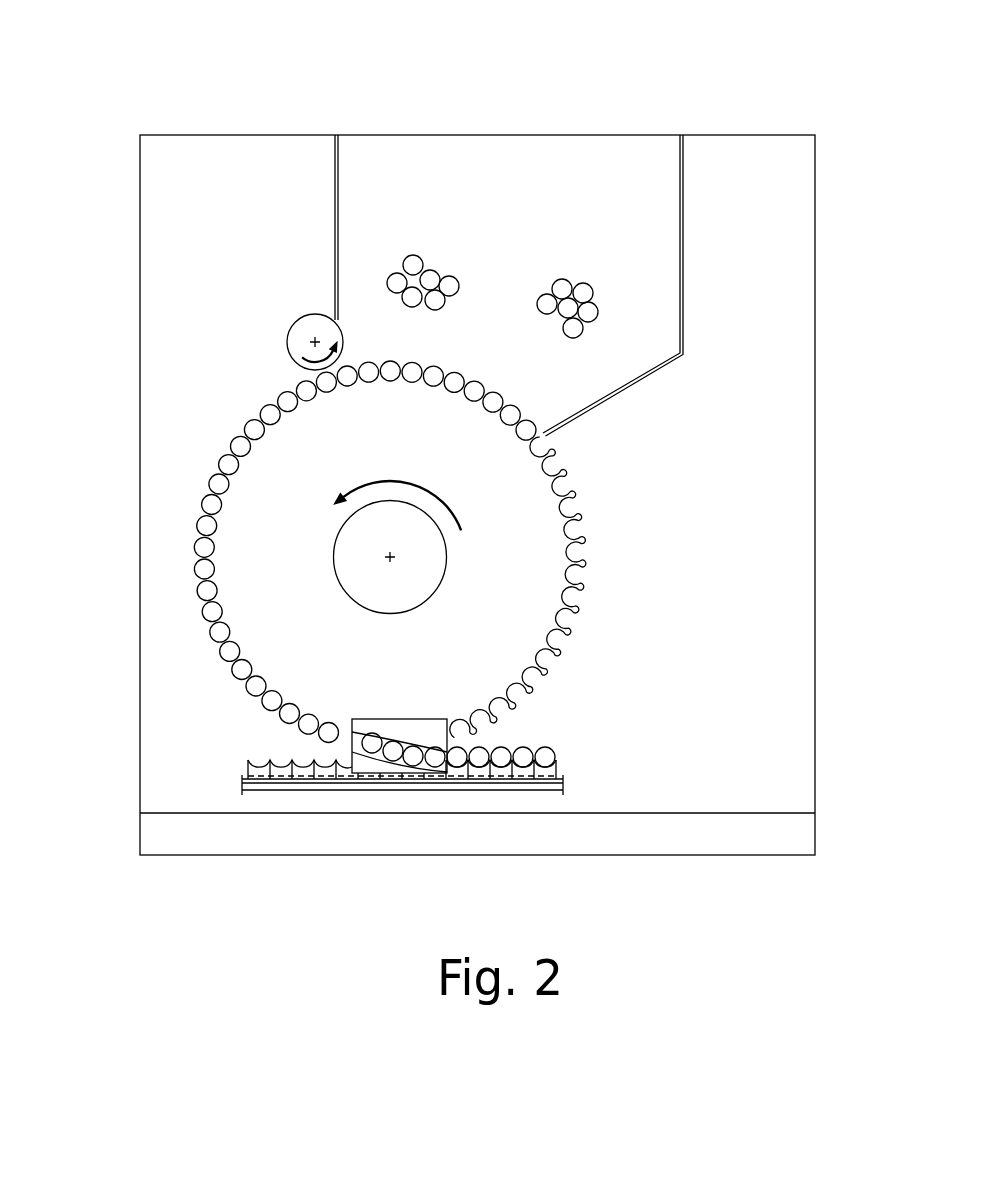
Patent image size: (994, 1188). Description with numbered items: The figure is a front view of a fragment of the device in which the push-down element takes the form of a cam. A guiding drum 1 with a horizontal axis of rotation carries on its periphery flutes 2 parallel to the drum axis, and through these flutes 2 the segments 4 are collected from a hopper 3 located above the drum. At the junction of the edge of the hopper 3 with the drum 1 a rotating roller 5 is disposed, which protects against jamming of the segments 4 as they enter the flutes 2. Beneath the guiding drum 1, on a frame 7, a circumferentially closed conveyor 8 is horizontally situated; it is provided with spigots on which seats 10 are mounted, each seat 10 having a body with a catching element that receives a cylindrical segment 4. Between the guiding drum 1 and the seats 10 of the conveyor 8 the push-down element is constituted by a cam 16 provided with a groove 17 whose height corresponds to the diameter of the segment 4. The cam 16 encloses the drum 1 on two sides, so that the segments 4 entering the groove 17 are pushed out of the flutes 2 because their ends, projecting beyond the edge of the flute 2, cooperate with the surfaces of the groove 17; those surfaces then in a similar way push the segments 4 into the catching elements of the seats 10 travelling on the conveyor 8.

The guiding drum 1 is at (278, 487).
The flutes 2 is at (568, 502).
The hopper 3 is at (626, 185).
The segments 4 is at (413, 257).
The rotating roller 5 is at (305, 323).
The frame 7 is at (383, 845).
The conveyor 8 is at (280, 788).
The seats 10 is at (257, 770).
The cam 16 is at (432, 742).
The groove 17 is at (352, 730).